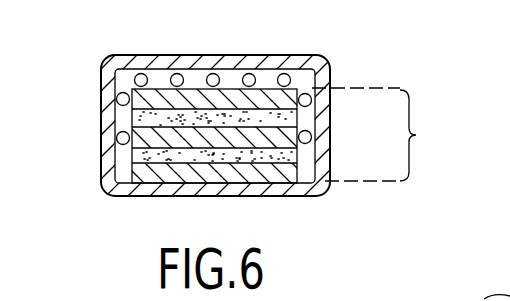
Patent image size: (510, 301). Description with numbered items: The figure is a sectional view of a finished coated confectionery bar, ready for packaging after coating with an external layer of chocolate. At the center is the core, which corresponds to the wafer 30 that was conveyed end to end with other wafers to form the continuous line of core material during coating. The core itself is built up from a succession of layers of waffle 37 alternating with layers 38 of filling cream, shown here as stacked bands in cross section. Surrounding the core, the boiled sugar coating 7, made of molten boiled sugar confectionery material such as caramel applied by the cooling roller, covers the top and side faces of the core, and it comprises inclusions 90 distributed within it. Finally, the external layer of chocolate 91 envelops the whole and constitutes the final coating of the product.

The boiled sugar coating 7 is at (211, 127).
The wafer 30 is at (380, 134).
The layers of waffle 37 is at (142, 178).
The layers of filling cream 38 is at (278, 118).
The inclusions 90 is at (250, 80).
The external layer of chocolate 91 is at (101, 80).